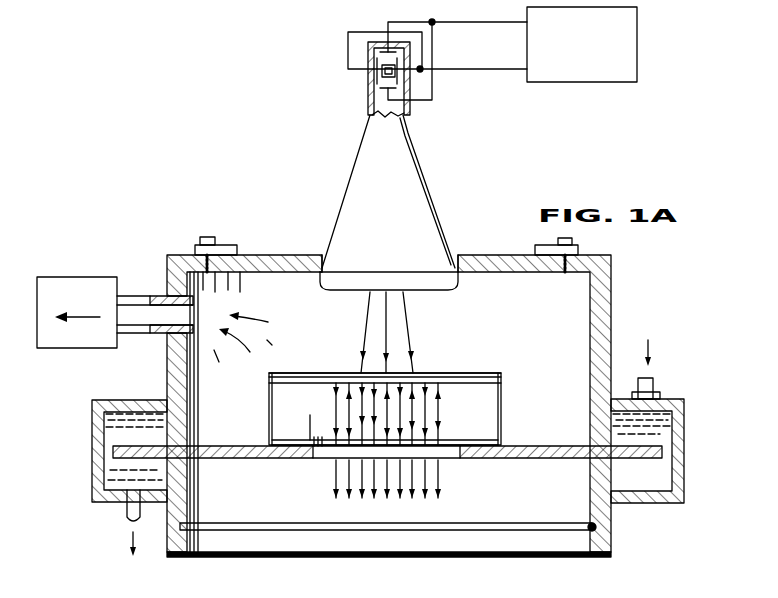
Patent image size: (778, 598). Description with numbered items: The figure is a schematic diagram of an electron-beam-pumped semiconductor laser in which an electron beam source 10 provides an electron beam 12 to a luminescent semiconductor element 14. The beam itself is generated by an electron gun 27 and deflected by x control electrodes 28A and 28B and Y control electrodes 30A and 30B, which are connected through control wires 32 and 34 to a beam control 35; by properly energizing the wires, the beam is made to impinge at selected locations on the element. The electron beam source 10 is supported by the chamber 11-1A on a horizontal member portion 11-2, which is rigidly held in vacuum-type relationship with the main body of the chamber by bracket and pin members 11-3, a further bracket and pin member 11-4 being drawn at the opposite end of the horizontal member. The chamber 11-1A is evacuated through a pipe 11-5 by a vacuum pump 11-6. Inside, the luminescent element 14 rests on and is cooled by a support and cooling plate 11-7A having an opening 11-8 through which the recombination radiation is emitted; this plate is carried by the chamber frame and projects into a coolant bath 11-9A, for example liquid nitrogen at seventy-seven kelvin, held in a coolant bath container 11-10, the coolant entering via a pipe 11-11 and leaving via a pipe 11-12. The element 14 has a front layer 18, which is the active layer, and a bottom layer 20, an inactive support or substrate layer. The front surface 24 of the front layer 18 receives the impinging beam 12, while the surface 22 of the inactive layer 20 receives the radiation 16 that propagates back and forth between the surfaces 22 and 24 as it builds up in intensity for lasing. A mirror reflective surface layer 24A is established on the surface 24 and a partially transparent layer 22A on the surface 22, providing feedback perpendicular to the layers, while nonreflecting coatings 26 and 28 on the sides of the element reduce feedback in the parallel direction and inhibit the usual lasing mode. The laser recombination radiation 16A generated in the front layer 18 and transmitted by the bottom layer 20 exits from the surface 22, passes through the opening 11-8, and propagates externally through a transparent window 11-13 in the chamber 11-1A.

The electron beam source 10 is at (450, 212).
The electron beam 12 is at (385, 323).
The luminescent semiconductor element 14 is at (535, 382).
The recombination radiation 16 is at (413, 432).
The laser recombination radiation 16A is at (428, 482).
The front layer 18 is at (283, 383).
The bottom layer 20 is at (283, 430).
The surface of the support inactive layer 22 is at (287, 443).
The partially transparent layer 22A is at (490, 447).
The front surface 24 is at (345, 198).
The mirror reflective surface layer 24A is at (493, 373).
The nonreflecting coating 26 is at (269, 412).
The electron gun 27 is at (382, 70).
The nonreflecting coating 28 is at (501, 412).
The x control electrode 28A is at (377, 76).
The x control electrode 28B is at (397, 80).
The Y control electrode 30A is at (385, 50).
The Y control electrode 30B is at (383, 90).
The control wire 32 is at (455, 69).
The control wire 34 is at (455, 22).
The beam control 35 is at (637, 66).
The chamber 11-1A is at (611, 292).
The horizontal member portion 11-2 is at (475, 262).
The bracket and pin members 11-3 is at (578, 250).
The clamp 11-4 is at (225, 247).
The pipe 11-5 is at (146, 333).
The vacuum pump 11-6 is at (97, 292).
The support and cooling plate 11-7A is at (572, 462).
The opening 11-8 is at (447, 456).
The coolant bath 11-9A is at (662, 428).
The coolant bath container 11-10 is at (684, 487).
The pipe 11-11 is at (655, 388).
The pipe 11-12 is at (127, 512).
The transparent window 11-13 is at (290, 550).